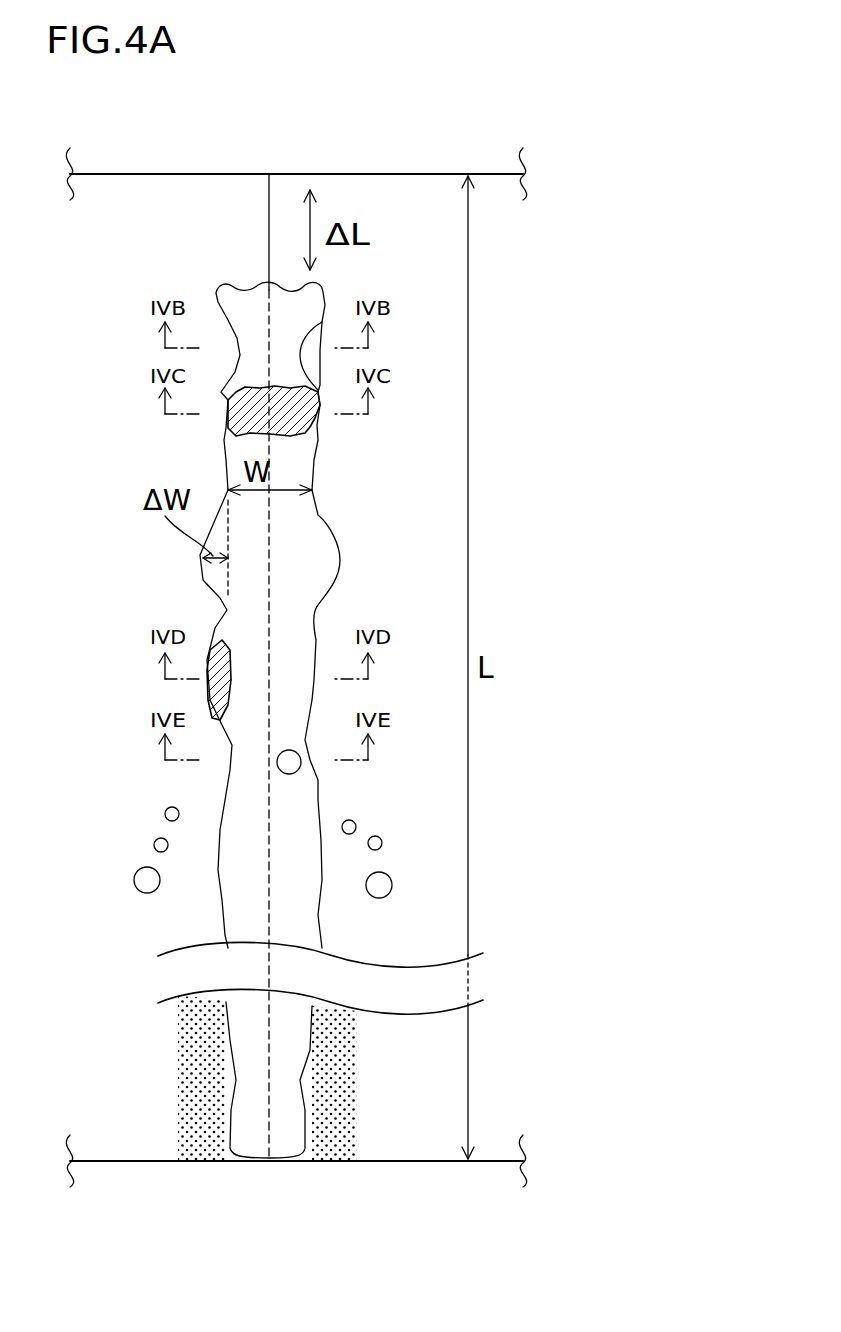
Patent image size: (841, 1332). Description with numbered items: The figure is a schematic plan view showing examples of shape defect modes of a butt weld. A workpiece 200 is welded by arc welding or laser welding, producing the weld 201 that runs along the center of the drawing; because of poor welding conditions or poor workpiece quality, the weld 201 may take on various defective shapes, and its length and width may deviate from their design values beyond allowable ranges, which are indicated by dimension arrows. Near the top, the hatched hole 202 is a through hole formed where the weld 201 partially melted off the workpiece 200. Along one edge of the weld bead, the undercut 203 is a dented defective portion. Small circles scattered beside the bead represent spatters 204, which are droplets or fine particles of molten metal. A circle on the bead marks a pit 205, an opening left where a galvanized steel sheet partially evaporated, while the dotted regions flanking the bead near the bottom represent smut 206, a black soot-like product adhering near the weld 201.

The workpiece 200 is at (387, 137).
The weld 201 is at (337, 512).
The hole 202 is at (228, 424).
The undercut 203 is at (218, 630).
The spatters 204 is at (132, 840).
The pit 205 is at (292, 766).
The smut 206 is at (200, 1148).